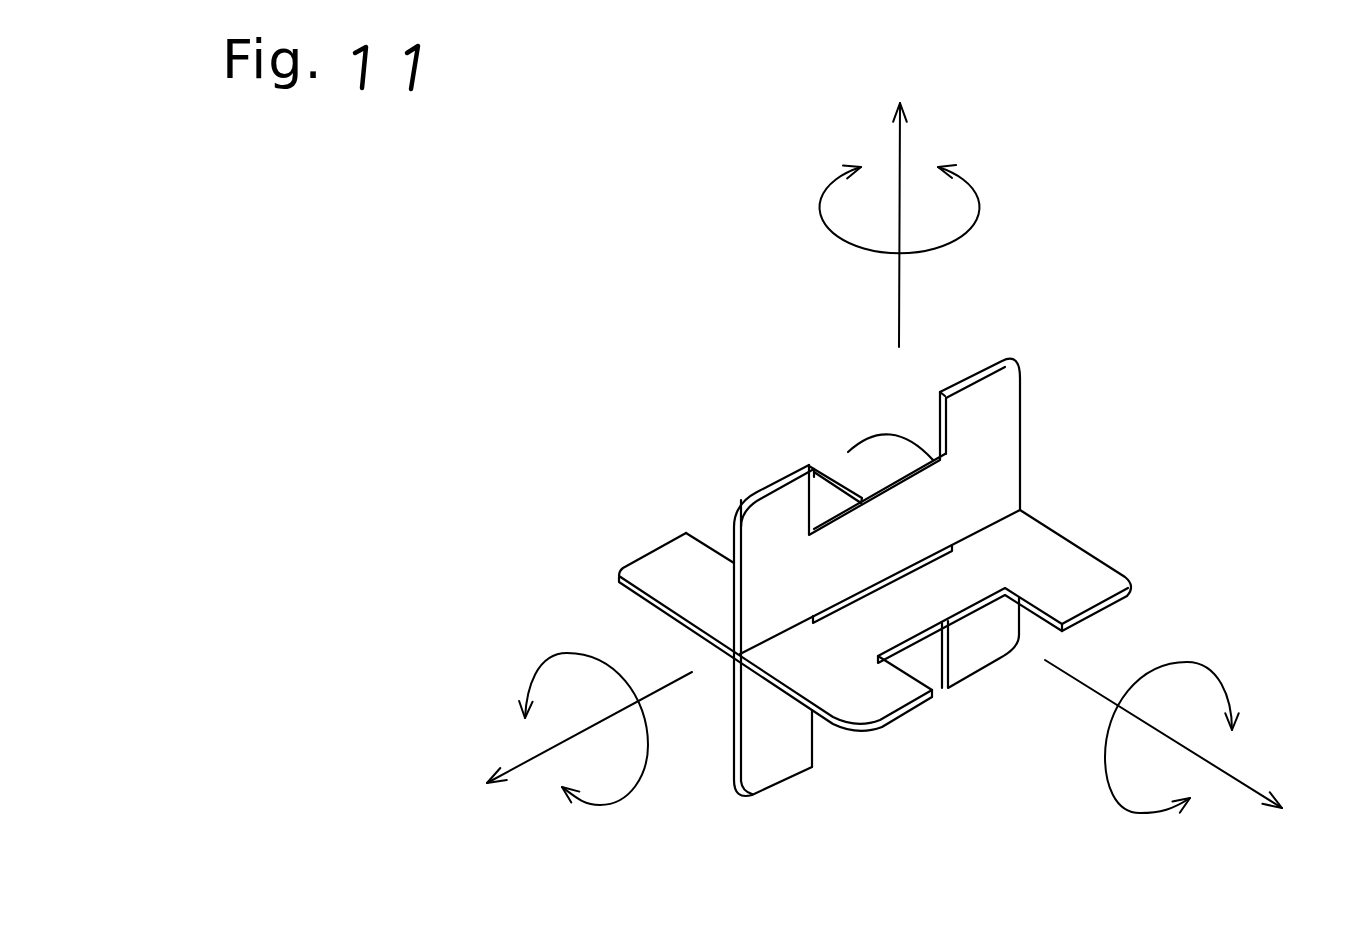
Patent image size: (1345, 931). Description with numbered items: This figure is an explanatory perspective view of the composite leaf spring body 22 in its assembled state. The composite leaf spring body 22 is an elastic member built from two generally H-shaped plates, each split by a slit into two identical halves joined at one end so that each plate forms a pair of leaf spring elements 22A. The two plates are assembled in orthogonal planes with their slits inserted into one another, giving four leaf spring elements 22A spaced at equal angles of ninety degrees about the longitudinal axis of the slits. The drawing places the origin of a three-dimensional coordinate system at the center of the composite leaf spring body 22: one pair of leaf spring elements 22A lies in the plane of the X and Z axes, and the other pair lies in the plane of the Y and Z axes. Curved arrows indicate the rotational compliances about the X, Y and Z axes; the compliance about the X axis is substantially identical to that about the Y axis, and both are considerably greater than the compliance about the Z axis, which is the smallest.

The composite leaf spring body 22 is at (763, 433).
The leaf spring element 22A is at (887, 535).
The X-axis X is at (1177, 744).
The Y-axis Y is at (900, 208).
The Z-axis Z is at (575, 739).